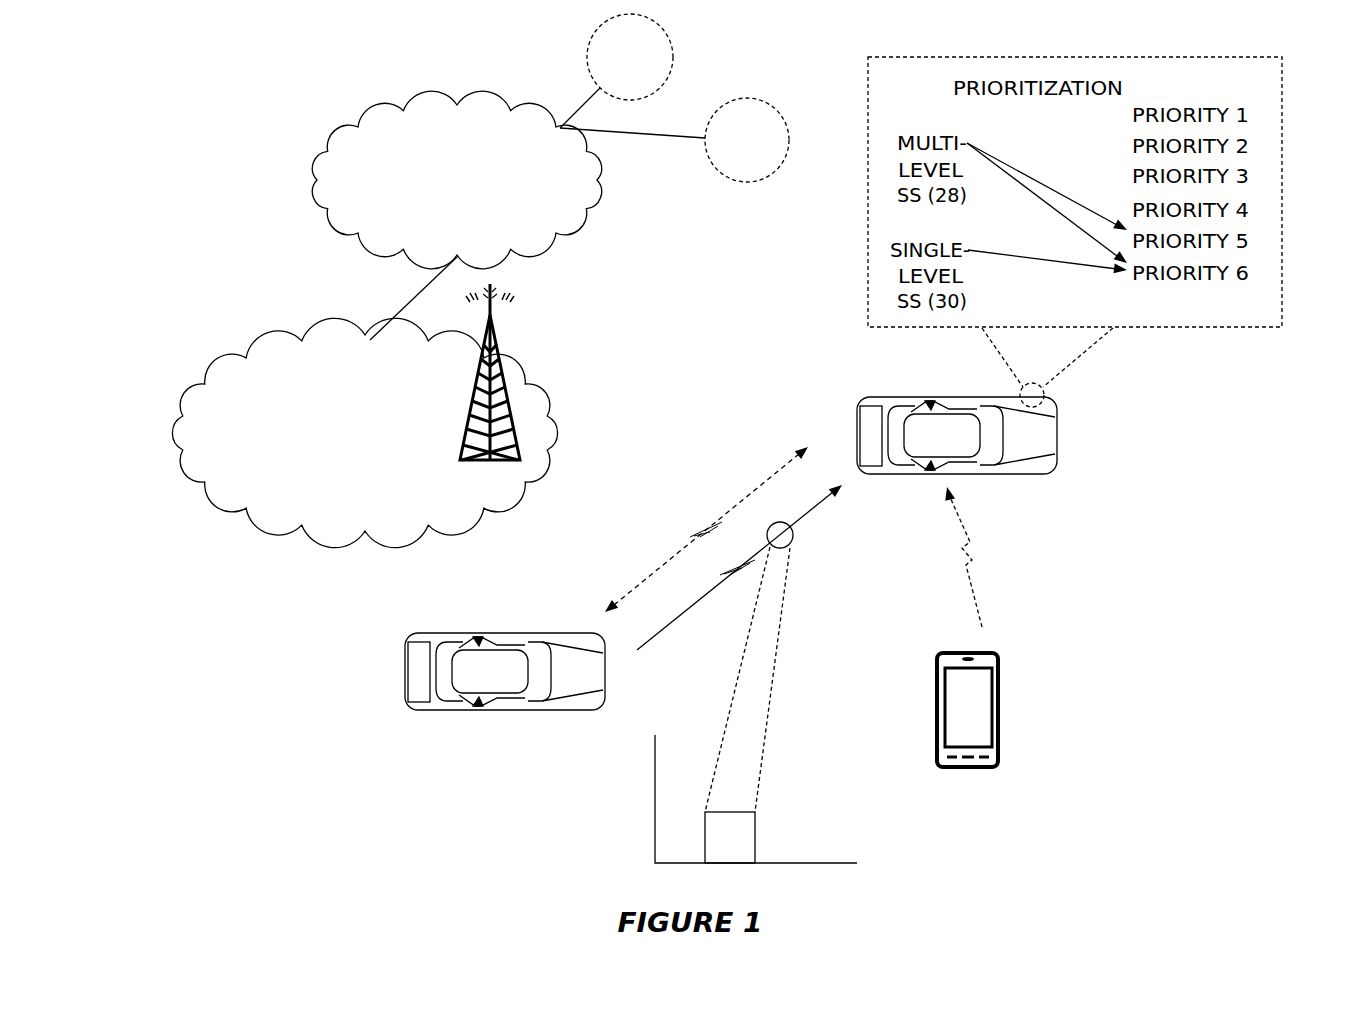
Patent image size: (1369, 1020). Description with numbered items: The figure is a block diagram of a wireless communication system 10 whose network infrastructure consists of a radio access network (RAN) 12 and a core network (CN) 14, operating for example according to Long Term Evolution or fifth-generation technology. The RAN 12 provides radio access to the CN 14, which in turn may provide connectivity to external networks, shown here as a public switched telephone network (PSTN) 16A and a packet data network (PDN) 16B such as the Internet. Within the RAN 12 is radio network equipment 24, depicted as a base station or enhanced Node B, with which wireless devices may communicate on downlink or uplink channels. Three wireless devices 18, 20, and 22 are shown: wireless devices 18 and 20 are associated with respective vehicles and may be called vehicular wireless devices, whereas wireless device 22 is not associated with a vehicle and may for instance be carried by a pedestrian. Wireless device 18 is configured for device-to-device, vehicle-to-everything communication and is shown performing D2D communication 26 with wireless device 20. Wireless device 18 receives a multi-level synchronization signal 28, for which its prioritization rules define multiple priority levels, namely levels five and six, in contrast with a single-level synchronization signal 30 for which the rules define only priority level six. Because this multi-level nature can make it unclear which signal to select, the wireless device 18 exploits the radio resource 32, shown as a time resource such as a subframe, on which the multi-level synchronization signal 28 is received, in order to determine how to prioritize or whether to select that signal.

The wireless communication system 10 is at (140, 143).
The radio access network (RAN) 12 is at (354, 410).
The core network (CN) 14 is at (446, 216).
The public switched telephone network (PSTN) 16A is at (615, 78).
The packet data network (PDN) 16B is at (732, 160).
The wireless device 18 is at (1044, 473).
The wireless device 20 is at (466, 712).
The wireless device 22 is at (976, 768).
The radio network equipment 24 is at (461, 461).
The D2D communication 26 is at (674, 559).
The multi-level synchronization signal 28 is at (680, 622).
The single-level synchronization signal 30 is at (972, 582).
The radio resource 32 is at (756, 838).